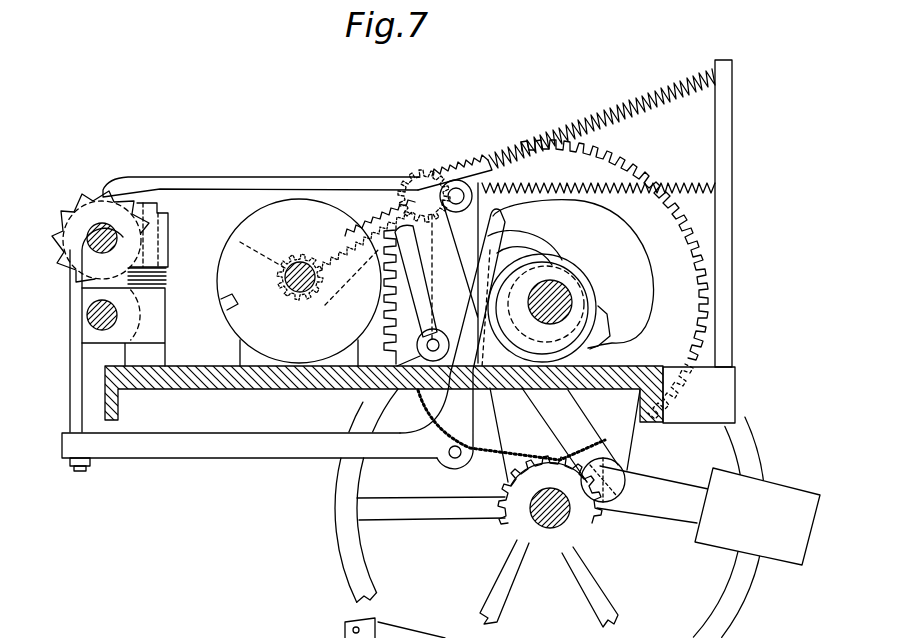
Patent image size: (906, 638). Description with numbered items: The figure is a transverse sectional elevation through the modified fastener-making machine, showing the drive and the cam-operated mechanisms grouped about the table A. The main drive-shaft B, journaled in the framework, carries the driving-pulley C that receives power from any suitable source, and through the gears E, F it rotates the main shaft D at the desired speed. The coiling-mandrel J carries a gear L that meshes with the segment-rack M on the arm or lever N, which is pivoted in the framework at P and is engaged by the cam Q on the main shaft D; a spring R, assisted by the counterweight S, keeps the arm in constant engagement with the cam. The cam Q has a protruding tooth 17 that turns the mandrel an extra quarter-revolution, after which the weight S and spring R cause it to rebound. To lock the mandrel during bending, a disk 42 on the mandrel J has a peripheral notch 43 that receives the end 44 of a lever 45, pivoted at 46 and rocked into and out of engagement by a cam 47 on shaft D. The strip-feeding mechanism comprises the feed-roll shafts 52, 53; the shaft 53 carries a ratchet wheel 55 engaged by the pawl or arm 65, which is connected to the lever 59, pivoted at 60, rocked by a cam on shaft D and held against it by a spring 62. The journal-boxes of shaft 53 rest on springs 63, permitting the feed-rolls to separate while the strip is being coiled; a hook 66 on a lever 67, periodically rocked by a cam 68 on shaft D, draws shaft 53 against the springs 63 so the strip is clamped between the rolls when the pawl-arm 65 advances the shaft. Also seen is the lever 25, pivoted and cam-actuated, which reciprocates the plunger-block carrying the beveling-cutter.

The table A is at (226, 378).
The gear F is at (685, 323).
The spring R is at (642, 97).
The spring 62 is at (660, 188).
The pawl or arm 65 is at (182, 180).
The hook 66 is at (74, 382).
The lever 67 is at (126, 458).
The pivot 60 is at (449, 455).
The arm or lever N is at (452, 339).
The lever 59 is at (459, 271).
The rack M is at (416, 183).
The gear L is at (299, 282).
The coiling-mandrel J is at (302, 270).
The notch 43 is at (224, 304).
The disk 42 is at (238, 236).
The end of lever 44 is at (368, 282).
The lever 45 is at (410, 300).
The pivot 46 is at (378, 374).
The cam Q is at (625, 253).
The protruding portion or tooth 17 is at (500, 215).
The cam 47 is at (604, 332).
The cam 68 is at (556, 280).
The main shaft D is at (562, 304).
The shaft 53 is at (101, 224).
The ratchet disk or wheel 55 is at (70, 210).
The springs 63 is at (167, 282).
The shaft 52 is at (90, 322).
The driving-pulley C is at (341, 530).
The gear E is at (506, 532).
The main drive-shaft B is at (551, 524).
The pivot P is at (606, 492).
The counterweight S is at (790, 556).
The lever 25 is at (400, 637).